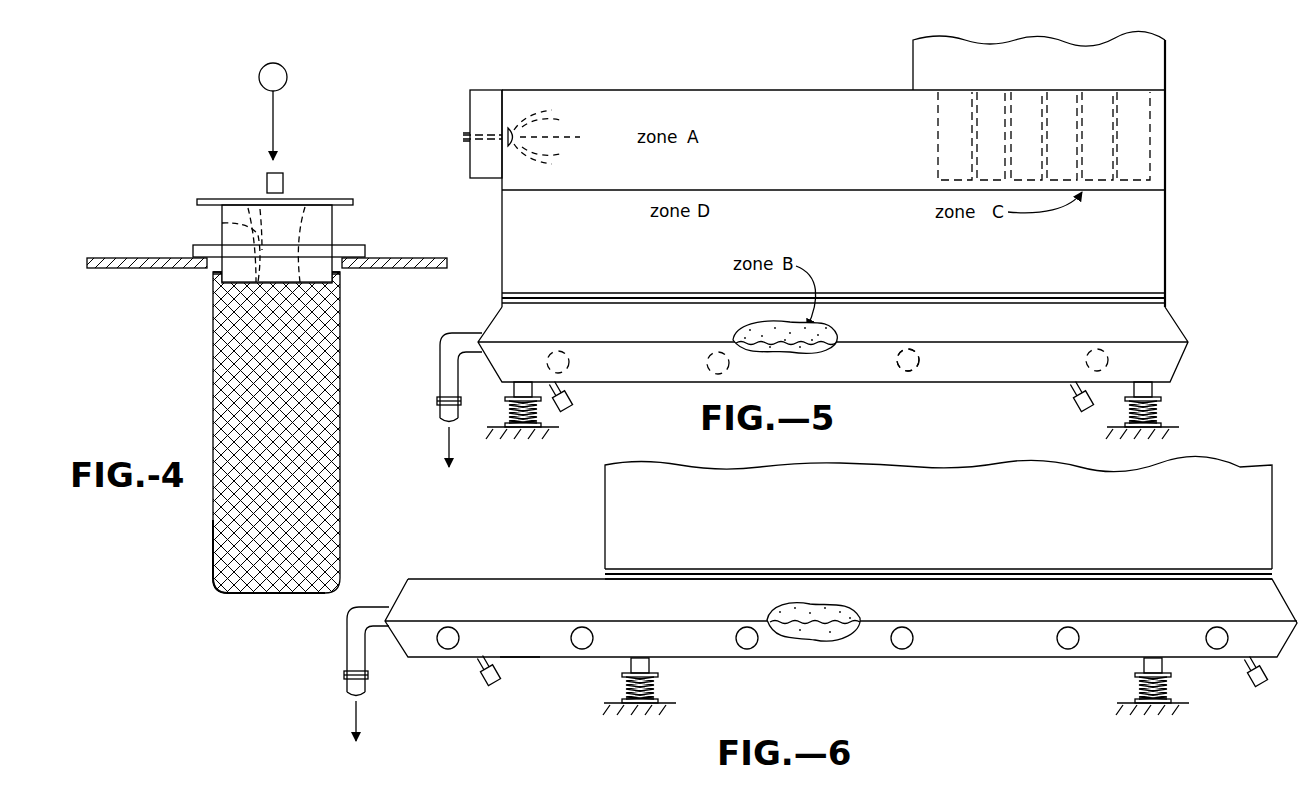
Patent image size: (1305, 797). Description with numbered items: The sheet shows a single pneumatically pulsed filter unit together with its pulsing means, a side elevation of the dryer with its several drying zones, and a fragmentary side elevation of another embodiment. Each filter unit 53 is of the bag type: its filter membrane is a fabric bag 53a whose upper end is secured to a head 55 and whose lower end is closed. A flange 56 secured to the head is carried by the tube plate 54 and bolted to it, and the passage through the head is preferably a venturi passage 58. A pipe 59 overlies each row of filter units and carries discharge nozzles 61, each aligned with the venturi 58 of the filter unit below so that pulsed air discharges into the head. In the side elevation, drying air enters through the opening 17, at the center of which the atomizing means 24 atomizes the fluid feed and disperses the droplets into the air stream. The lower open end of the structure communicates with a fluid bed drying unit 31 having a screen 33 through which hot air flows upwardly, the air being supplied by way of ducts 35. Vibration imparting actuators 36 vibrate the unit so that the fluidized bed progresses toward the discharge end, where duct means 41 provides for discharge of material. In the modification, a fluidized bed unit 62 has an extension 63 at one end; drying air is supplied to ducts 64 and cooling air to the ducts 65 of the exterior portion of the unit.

In FIG. 5, the opening 17 is at (500, 127).
In FIG. 5, the atomizing means 24 is at (512, 125).
In FIG. 5, the drying unit 31 is at (1013, 392).
In FIG. 5, the screen 33 is at (780, 345).
In FIG. 5, the ducts 35 is at (912, 371).
In FIG. 5, the vibration imparting actuators 36 is at (572, 404).
In FIG. 6, the vibration imparting actuators 36 is at (484, 685).
In FIG. 5, the duct means 41 is at (462, 333).
In FIG. 6, the duct means 41 is at (347, 636).
In FIG. 4, the filter units 53 is at (352, 455).
In FIG. 4, the fabric bag 53a is at (215, 518).
In FIG. 4, the tube plate 54 is at (417, 258).
In FIG. 4, the head 55 is at (332, 215).
In FIG. 4, the flange 56 is at (345, 245).
In FIG. 4, the venturi passage 58 is at (222, 223).
In FIG. 4, the pipe 59 is at (259, 74).
In FIG. 4, the discharge nozzles 61 is at (267, 183).
In FIG. 6, the discharge nozzles 61 is at (588, 522).
In FIG. 6, the fluidized bed unit 62 is at (986, 675).
In FIG. 6, the extension 63 is at (520, 658).
In FIG. 6, the ducts 64 is at (747, 650).
In FIG. 6, the ducts 65 is at (447, 650).